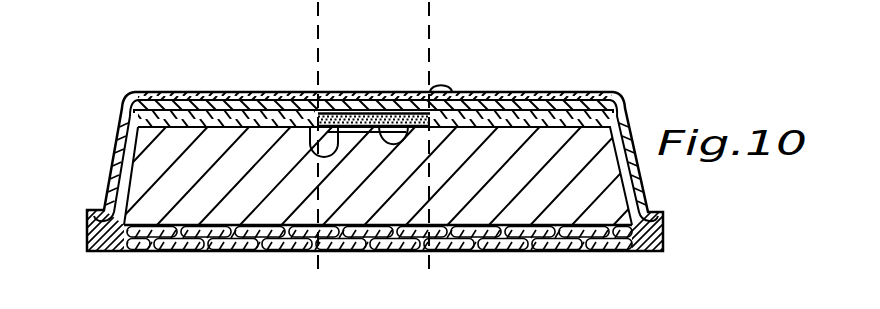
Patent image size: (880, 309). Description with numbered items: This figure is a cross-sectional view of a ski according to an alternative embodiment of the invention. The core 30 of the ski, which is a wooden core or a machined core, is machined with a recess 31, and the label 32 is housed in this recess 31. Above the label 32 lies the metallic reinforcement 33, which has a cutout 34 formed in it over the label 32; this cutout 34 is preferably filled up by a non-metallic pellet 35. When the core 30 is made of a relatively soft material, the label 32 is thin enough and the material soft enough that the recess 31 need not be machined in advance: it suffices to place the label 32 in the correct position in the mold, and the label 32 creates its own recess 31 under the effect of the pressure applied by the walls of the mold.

The core 30 is at (632, 137).
The recess 31 is at (318, 108).
The label 32 is at (452, 86).
The metallic reinforcement 33 is at (256, 120).
The cutout 34 is at (484, 104).
The non-metallic pellet 35 is at (373, 113).